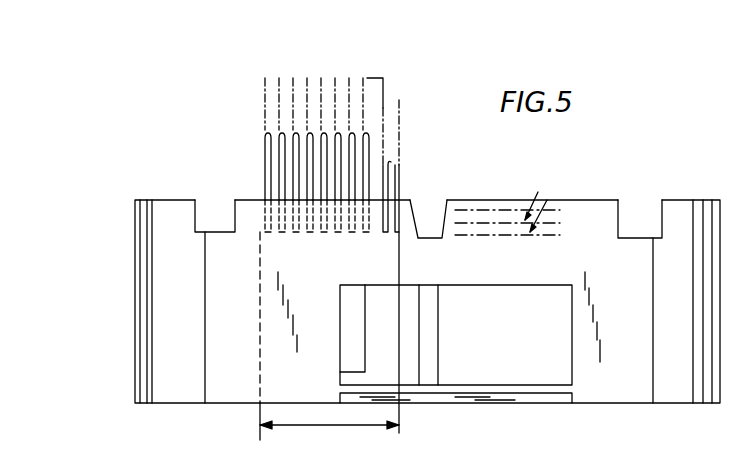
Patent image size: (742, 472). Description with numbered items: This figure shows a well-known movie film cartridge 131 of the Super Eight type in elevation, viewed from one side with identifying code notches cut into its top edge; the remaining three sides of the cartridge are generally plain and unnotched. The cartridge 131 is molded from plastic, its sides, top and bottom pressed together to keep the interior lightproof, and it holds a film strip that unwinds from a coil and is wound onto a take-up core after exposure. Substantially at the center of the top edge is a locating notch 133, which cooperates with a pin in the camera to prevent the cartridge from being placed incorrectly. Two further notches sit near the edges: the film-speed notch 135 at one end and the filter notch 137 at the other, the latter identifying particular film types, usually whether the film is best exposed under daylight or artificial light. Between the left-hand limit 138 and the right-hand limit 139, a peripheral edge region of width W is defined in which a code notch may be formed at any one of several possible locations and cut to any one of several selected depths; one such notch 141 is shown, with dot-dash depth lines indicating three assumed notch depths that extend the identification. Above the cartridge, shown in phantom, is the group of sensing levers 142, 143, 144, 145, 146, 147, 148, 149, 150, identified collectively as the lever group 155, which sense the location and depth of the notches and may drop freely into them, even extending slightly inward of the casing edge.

The film cartridge 131 is at (150, 347).
The locating notch 133 is at (443, 213).
The film-speed notch 135 is at (648, 215).
The filter notch 137 is at (208, 232).
The left-hand limit 138 is at (260, 323).
The right-hand limit 139 is at (400, 324).
The notch 141 is at (427, 220).
The sensing lever 142 is at (386, 110).
The sensing lever 143 is at (379, 93).
The sensing lever 144 is at (388, 72).
The sensing lever 145 is at (380, 74).
The sensing lever 146 is at (357, 76).
The sensing lever 147 is at (328, 76).
The sensing lever 148 is at (302, 76).
The sensing lever 149 is at (281, 77).
The sensing lever 150 is at (262, 84).
The group of sensing levers 155 is at (254, 112).